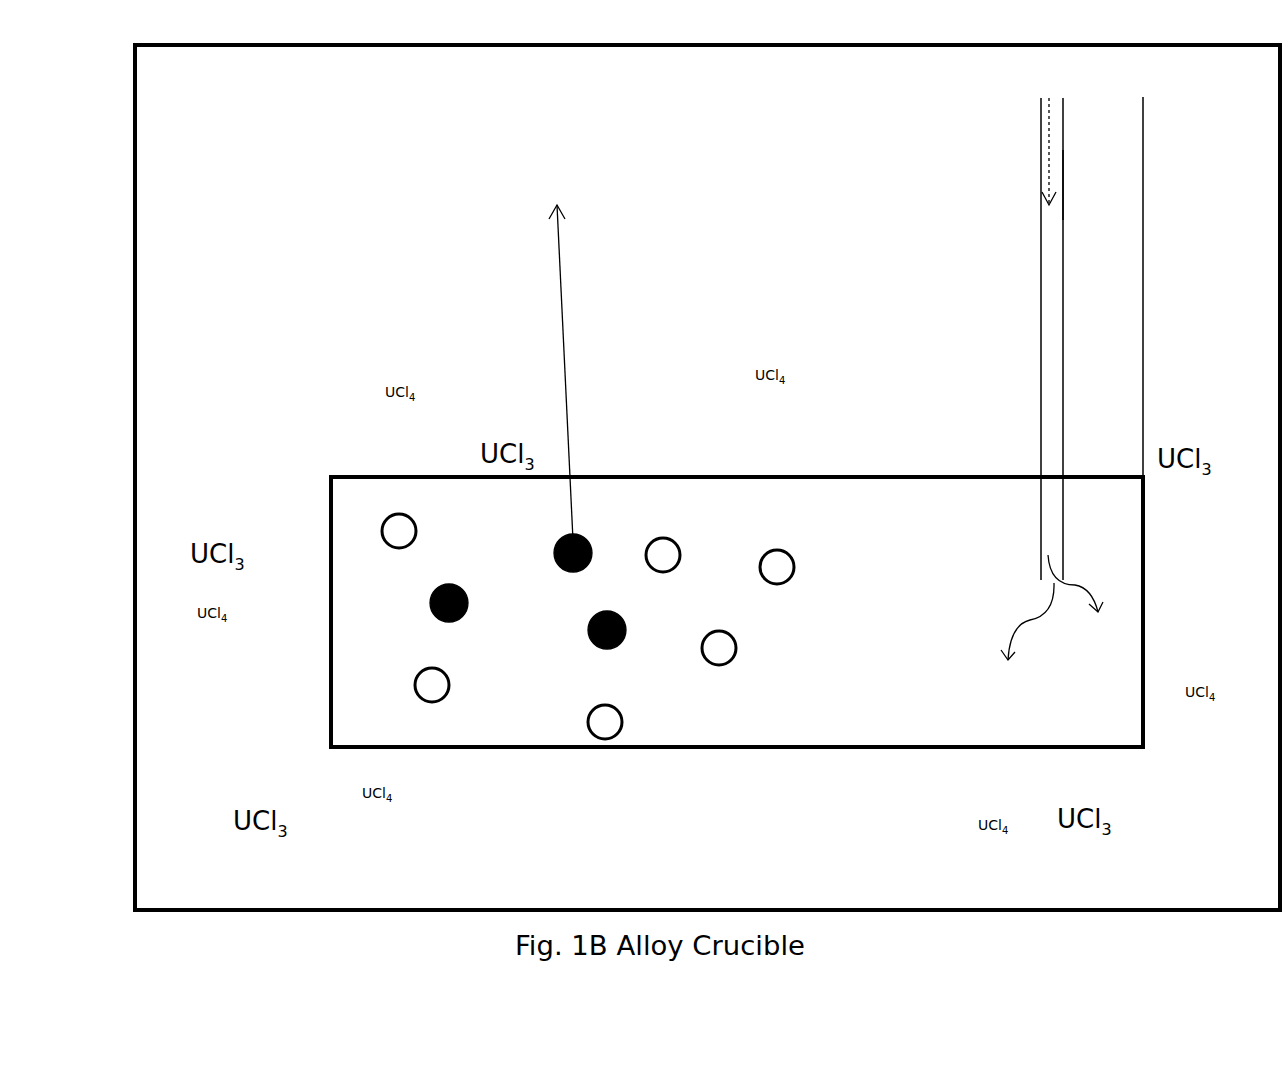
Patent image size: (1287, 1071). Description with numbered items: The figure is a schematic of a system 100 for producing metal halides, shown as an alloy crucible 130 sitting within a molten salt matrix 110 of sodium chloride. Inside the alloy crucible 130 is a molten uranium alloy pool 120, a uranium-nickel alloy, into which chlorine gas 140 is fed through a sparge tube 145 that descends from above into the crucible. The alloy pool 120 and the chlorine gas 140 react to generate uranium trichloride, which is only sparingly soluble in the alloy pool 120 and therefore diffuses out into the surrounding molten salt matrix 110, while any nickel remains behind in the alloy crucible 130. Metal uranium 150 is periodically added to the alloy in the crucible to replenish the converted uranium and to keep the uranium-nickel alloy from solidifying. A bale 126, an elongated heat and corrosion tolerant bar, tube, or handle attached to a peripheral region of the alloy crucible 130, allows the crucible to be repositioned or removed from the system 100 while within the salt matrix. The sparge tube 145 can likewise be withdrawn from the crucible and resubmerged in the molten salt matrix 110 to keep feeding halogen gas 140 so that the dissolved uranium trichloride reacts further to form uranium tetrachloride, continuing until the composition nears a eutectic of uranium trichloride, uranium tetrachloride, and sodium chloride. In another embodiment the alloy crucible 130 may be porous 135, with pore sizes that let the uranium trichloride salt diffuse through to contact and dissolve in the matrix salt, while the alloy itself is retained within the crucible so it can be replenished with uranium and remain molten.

The system 100 is at (684, 863).
The molten salt matrix 110 is at (217, 175).
The molten uranium alloy pool 120 is at (477, 738).
The bale 126 is at (1153, 313).
The alloy crucible 130 is at (1137, 555).
The porous 135 is at (406, 512).
The chlorine gas 140 is at (980, 371).
The sparge tube 145 is at (1066, 188).
The metal uranium 150 is at (557, 158).